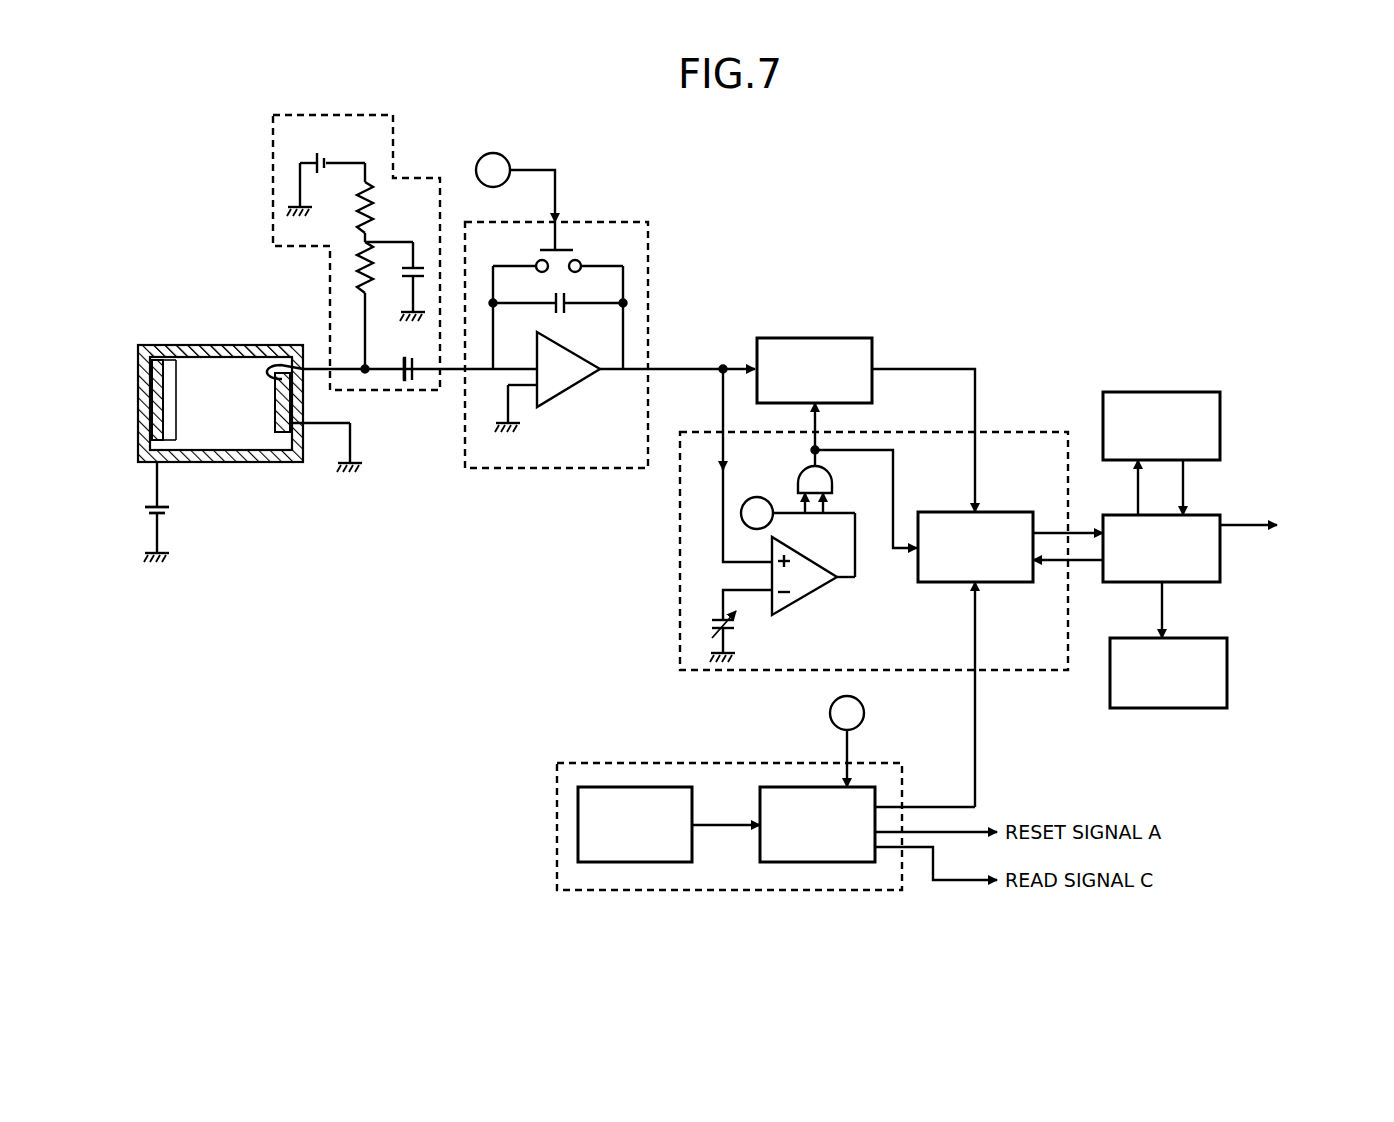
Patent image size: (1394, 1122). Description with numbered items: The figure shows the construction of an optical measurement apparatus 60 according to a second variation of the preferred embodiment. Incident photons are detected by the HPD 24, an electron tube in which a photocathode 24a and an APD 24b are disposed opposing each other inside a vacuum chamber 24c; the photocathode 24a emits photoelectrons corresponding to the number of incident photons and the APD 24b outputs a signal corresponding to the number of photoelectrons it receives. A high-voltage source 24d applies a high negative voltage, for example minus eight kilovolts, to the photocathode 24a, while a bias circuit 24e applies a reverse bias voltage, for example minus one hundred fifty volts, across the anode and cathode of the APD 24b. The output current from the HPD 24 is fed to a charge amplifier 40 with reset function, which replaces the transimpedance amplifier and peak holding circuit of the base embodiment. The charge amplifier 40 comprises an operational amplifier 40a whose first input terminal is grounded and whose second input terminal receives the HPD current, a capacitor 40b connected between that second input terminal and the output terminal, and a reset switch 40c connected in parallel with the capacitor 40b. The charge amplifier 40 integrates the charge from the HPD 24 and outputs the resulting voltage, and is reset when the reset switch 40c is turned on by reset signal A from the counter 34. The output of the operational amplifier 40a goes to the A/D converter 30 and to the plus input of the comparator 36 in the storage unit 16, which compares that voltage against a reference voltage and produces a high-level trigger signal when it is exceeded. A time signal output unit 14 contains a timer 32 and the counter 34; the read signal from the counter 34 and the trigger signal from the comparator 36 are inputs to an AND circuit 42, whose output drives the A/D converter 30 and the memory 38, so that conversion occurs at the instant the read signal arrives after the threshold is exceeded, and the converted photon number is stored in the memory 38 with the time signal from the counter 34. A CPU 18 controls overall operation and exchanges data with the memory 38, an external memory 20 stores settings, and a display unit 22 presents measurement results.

The time signal output unit 14 is at (685, 793).
The storage unit 16 is at (874, 577).
The CPU 18 is at (1220, 571).
The external memory 20 is at (1220, 443).
The display unit 22 is at (1227, 693).
The HPD 24 is at (141, 410).
The photocathode 24a is at (160, 345).
The vacuum chamber 24c is at (241, 345).
The APD 24b is at (281, 463).
The high-voltage source 24d is at (168, 515).
The bias circuit 24e is at (273, 190).
The A/D converter 30 is at (828, 337).
The timer 32 is at (600, 787).
The counter 34 is at (780, 787).
The comparator 36 is at (807, 594).
The memory 38 is at (1003, 585).
The charge amplifier 40 is at (583, 310).
The operational amplifier 40a is at (573, 390).
The capacitor 40b is at (565, 312).
The reset switch 40c is at (536, 262).
The AND circuit 42 is at (798, 480).
The optical measurement apparatus 60 is at (1102, 330).